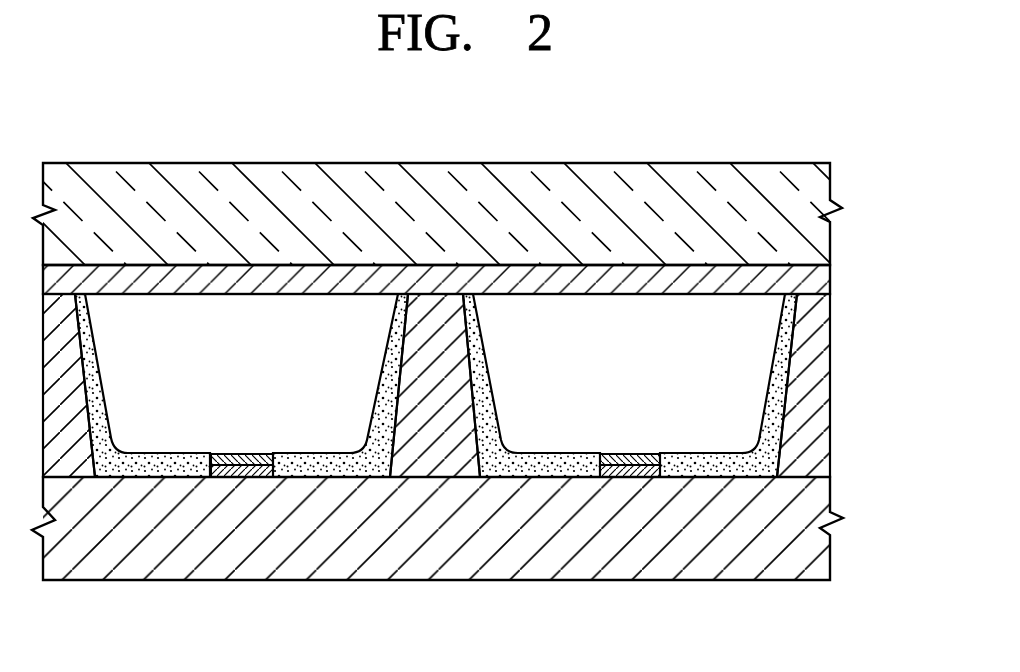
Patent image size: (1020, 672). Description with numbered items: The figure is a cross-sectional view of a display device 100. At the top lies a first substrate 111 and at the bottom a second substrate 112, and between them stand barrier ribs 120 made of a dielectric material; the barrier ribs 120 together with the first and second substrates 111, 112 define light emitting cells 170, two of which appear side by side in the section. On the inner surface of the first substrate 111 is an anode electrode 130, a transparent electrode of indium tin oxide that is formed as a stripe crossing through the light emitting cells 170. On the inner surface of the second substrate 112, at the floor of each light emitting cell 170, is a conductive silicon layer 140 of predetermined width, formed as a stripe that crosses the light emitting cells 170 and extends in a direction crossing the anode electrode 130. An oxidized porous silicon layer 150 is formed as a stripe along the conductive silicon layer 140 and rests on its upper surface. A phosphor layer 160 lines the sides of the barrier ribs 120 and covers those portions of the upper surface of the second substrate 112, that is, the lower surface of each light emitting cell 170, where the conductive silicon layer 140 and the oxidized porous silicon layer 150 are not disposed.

The display device 100 is at (124, 126).
The first substrate 111 is at (823, 186).
The second substrate 112 is at (820, 558).
The anode electrode 130 is at (820, 277).
The barrier ribs 120 is at (817, 343).
The phosphor layer 160 is at (780, 388).
The light emitting cells 170 is at (262, 399).
The oxidized porous silicon layer 150 is at (603, 477).
The conductive silicon layer 140 is at (652, 470).